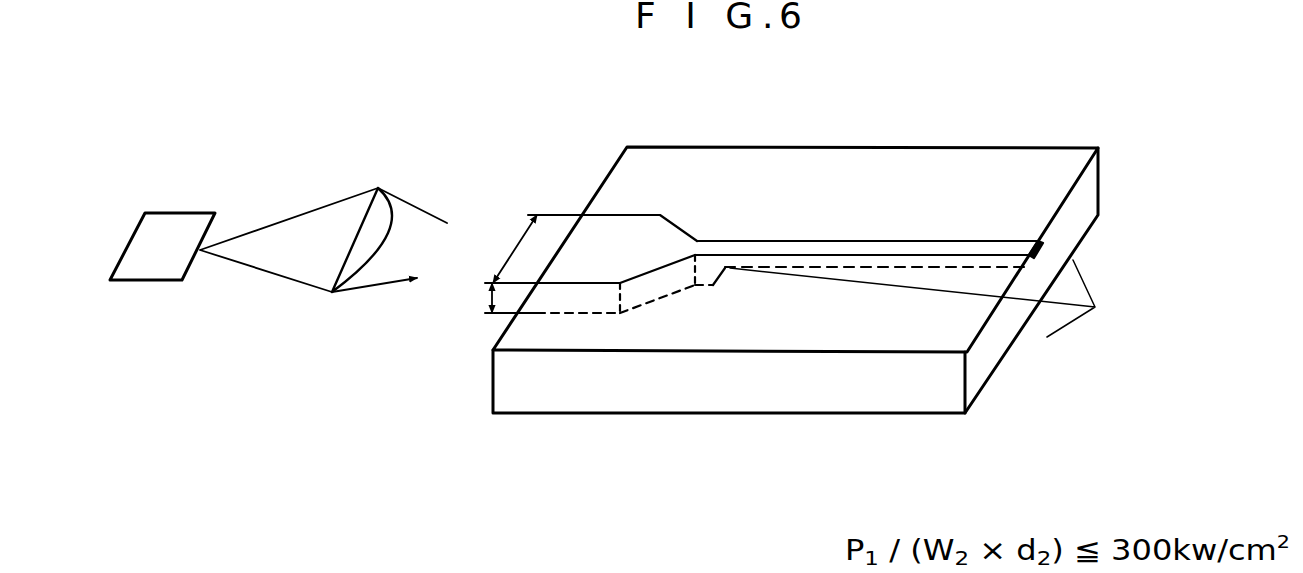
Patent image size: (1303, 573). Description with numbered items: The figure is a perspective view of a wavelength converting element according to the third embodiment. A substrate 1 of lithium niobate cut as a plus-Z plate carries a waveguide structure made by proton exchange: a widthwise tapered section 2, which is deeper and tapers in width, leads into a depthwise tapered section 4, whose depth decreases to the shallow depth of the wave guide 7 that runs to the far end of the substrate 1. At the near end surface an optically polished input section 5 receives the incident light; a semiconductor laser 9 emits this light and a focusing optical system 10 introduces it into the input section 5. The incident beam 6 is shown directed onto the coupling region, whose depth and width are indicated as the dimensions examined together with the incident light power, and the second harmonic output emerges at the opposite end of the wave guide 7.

The substrate 1 is at (793, 402).
The widthwise tapered section 2 is at (640, 227).
The depthwise tapered section 4 is at (728, 245).
The input section 5 is at (565, 233).
The incident light beam 6 is at (430, 263).
The wave guide 7 is at (892, 240).
The semiconductor laser 9 is at (143, 272).
The focusing optical system 10 is at (378, 188).